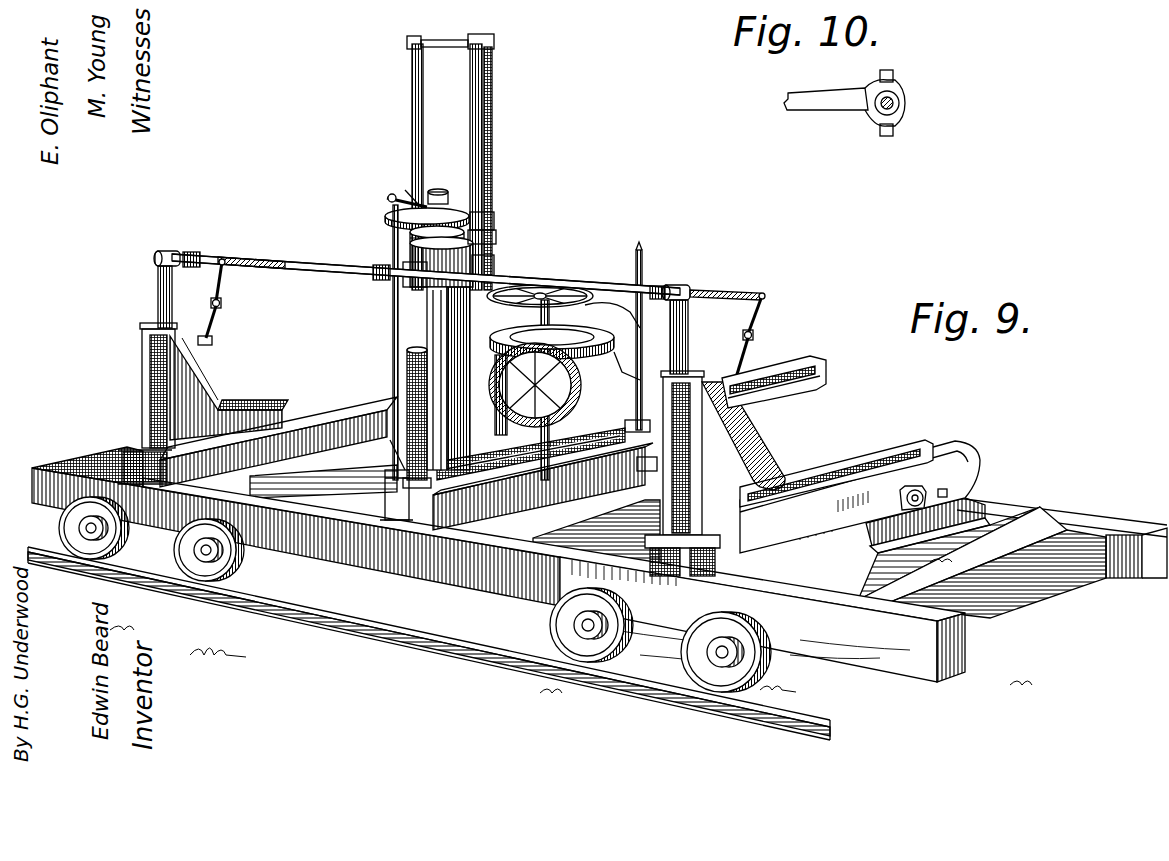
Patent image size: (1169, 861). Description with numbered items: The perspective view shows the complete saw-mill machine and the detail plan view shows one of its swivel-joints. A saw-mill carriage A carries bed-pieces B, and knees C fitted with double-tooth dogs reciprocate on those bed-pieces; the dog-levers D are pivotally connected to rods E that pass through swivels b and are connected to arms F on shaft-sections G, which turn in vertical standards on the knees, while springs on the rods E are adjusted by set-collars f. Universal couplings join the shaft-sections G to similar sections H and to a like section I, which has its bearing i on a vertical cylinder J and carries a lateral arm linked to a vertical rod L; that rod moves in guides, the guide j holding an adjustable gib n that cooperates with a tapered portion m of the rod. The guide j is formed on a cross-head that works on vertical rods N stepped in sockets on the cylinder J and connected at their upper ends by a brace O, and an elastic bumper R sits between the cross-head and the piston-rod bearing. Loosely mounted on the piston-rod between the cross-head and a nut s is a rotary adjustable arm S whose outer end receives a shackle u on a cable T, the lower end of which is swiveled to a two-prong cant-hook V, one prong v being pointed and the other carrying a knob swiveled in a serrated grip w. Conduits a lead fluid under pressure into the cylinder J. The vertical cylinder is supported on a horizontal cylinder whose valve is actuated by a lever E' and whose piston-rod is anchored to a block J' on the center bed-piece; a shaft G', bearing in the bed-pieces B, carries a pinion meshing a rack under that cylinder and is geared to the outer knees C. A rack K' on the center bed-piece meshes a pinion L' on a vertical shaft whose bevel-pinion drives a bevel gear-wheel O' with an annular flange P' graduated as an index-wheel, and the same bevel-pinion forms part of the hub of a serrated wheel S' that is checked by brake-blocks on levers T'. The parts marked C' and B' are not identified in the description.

In FIG. 9, the saw-mill carriage A is at (380, 560).
In FIG. 9, the bed-pieces B is at (570, 475).
In FIG. 9, the knees C is at (451, 431).
In FIG. 9, the pivot bearing C' is at (923, 491).
In FIG. 9, the dog-levers D is at (205, 346).
In FIG. 9, the rods E is at (486, 343).
In FIG. 10, the rods E is at (882, 108).
In FIG. 9, the lever E' is at (646, 335).
In FIG. 10, the arms F is at (838, 112).
In FIG. 9, the shaft-sections G is at (424, 302).
In FIG. 9, the shaft G' is at (506, 446).
In FIG. 9, the shaft-sections H is at (360, 272).
In FIG. 9, the shaft-section I is at (494, 268).
In FIG. 9, the vertical cylinder J is at (438, 362).
In FIG. 9, the block J' is at (774, 383).
In FIG. 9, the rack K' is at (531, 468).
In FIG. 9, the vertical rod L is at (494, 235).
In FIG. 9, the pinion L' is at (543, 486).
In FIG. 9, the vertical rods N is at (423, 140).
In FIG. 9, the brace O is at (205, 369).
In FIG. 9, the bevel gear-wheel O' is at (448, 61).
In FIG. 9, the elastic bumper R is at (410, 234).
In FIG. 9, the rotary adjustable arm S is at (416, 217).
In FIG. 9, the wheel S' is at (547, 336).
In FIG. 9, the annular flange P' is at (527, 389).
In FIG. 9, the cable T is at (385, 342).
In FIG. 9, the levers T' is at (600, 348).
In FIG. 9, the two-prong cant-hook V is at (378, 455).
In FIG. 9, the hand wheel B' is at (540, 367).
In FIG. 9, the conduits a is at (225, 264).
In FIG. 10, the swivels b is at (898, 103).
In FIG. 9, the set-collars f is at (211, 302).
In FIG. 9, the bearing i is at (412, 265).
In FIG. 9, the guide j is at (495, 220).
In FIG. 9, the tapered portion m is at (492, 206).
In FIG. 9, the adjustable gib n is at (494, 38).
In FIG. 9, the nut s is at (452, 175).
In FIG. 9, the shackle u is at (389, 197).
In FIG. 9, the prong v is at (406, 190).
In FIG. 9, the serrated grip w is at (195, 252).